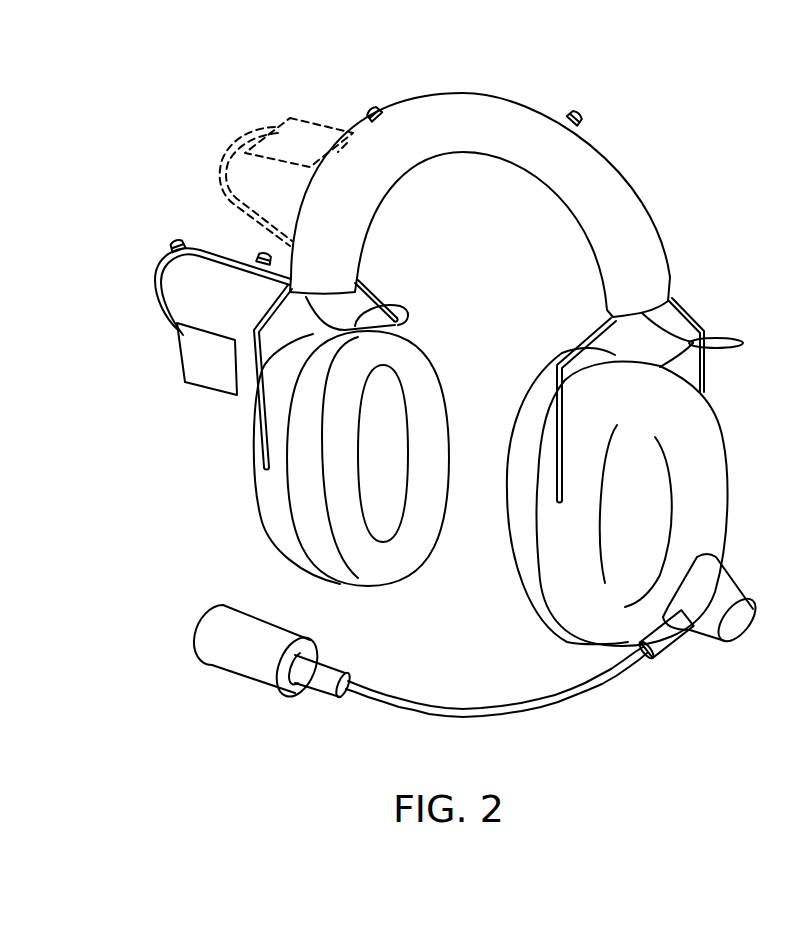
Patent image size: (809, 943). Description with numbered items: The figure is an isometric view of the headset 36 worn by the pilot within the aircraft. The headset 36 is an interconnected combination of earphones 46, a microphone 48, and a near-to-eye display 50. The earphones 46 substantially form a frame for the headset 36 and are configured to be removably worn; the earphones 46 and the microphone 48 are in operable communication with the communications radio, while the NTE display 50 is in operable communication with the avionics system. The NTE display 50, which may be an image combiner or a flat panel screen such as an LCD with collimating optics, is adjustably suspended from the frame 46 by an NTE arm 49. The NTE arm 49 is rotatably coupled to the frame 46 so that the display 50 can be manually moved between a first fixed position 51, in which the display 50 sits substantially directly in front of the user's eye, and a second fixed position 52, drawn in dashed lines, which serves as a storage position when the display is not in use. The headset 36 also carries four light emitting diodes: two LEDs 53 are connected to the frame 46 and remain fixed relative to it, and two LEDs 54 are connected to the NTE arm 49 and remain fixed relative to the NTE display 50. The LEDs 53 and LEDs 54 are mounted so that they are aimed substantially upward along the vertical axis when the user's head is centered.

The headset 36 is at (137, 162).
The earphones 46 is at (447, 392).
The microphone 48 is at (243, 679).
The NTE arm 49 is at (152, 290).
The NTE display 50 is at (178, 378).
The first fixed position 51 is at (153, 353).
The second fixed position 52 is at (250, 126).
The LEDs 53 is at (377, 112).
The LEDs 54 is at (177, 240).